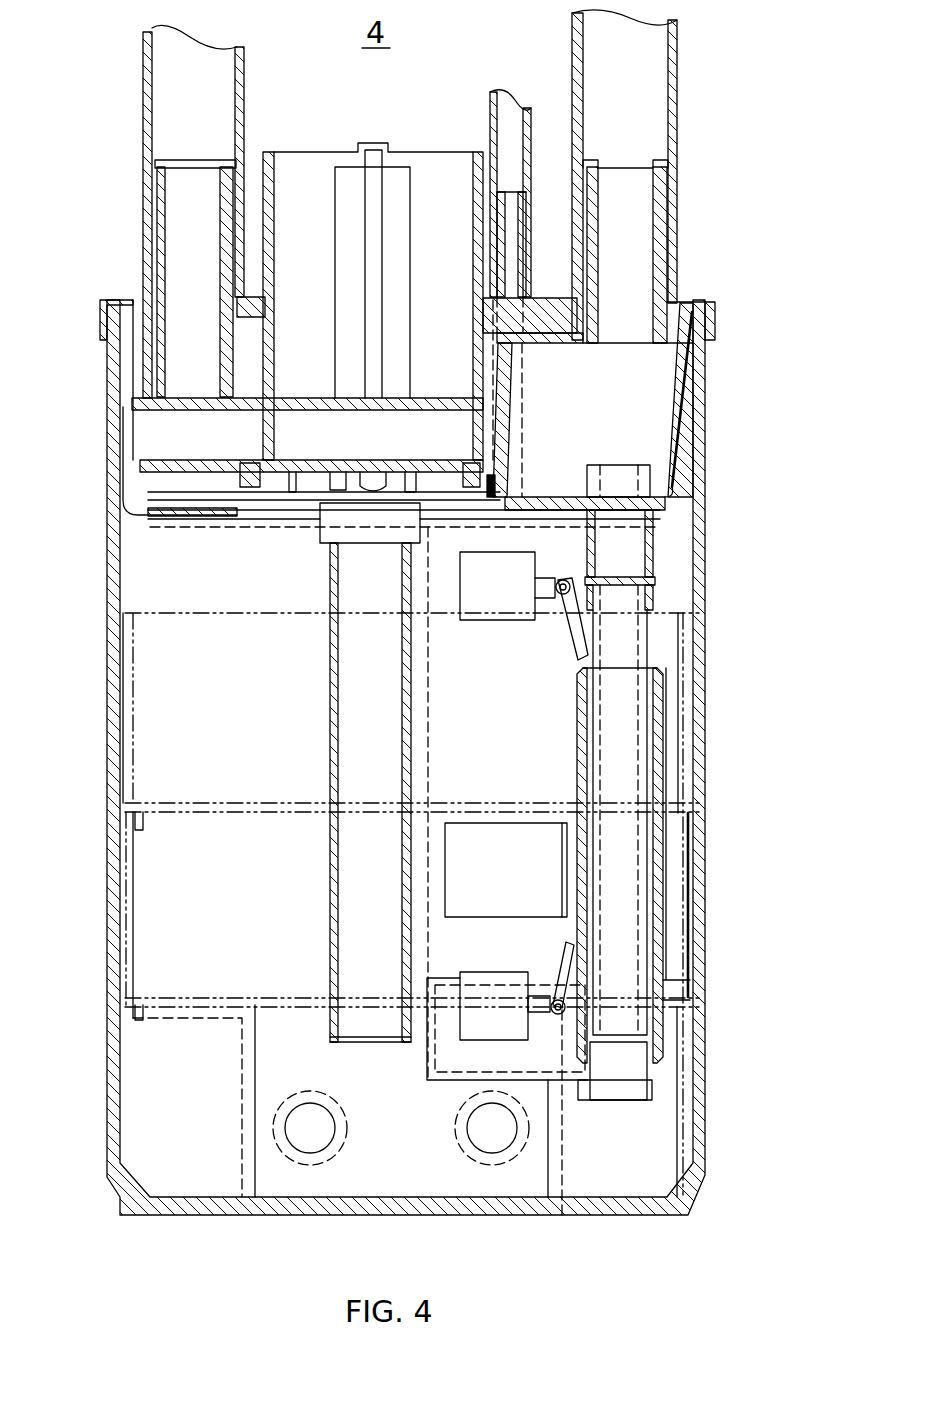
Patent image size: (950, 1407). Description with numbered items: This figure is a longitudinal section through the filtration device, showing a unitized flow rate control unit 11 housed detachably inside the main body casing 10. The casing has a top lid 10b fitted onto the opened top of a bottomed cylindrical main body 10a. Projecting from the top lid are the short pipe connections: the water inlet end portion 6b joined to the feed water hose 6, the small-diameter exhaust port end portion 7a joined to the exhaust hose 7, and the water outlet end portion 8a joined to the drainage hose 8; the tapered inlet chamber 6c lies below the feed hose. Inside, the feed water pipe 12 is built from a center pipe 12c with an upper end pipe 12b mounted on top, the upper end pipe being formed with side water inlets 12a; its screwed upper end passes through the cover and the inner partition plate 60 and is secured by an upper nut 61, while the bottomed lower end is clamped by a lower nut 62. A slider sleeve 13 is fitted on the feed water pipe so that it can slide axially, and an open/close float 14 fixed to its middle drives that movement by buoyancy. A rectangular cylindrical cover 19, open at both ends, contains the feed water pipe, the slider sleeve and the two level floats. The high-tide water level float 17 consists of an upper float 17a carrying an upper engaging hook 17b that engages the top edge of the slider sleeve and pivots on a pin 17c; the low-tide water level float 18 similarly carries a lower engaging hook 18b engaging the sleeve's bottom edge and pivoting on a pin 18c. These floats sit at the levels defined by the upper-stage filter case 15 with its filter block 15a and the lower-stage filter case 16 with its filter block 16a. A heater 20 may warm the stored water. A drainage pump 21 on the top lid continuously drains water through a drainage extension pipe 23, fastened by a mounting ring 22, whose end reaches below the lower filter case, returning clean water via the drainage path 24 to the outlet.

The feed water hose 6 is at (677, 98).
The water inlet end portion 6b is at (640, 225).
The tapered chamber 6c is at (648, 385).
The exhaust hose 7 is at (490, 115).
The exhaust port end portion 7a is at (518, 232).
The drainage hose 8 is at (143, 90).
The water outlet end portion 8a is at (175, 210).
The main body casing 10 is at (712, 672).
The main body 10a is at (706, 752).
The top lid 10b is at (714, 340).
The flow rate control unit 11 is at (574, 767).
The feed water pipe 12 is at (664, 598).
The water inlets 12a is at (655, 563).
The upper end pipe 12b is at (655, 543).
The center pipe 12c is at (640, 718).
The slider sleeve 13 is at (665, 875).
The open/close float 14 is at (474, 823).
The upper-stage filter case 15 is at (128, 745).
The upper absorbent block 15a is at (165, 708).
The lower-stage filter case 16 is at (123, 907).
The lower absorbent block 16a is at (155, 935).
The high-tide water level float 17 is at (486, 630).
The upper float 17a is at (480, 622).
The upper engaging hook 17b is at (580, 657).
The pin 17c is at (566, 605).
The low-tide water level float 18 is at (475, 972).
The lower engaging hook 18b is at (566, 972).
The pin 18c is at (555, 1020).
The cover 19 is at (430, 775).
The heater 20 is at (475, 1235).
The drainage pump 21 is at (306, 148).
The mounting ring 22 is at (320, 533).
The drainage extension pipe 23 is at (330, 683).
The drainage path 24 is at (205, 450).
The inner partition plate 60 is at (545, 497).
The upper nut 61 is at (580, 482).
The lower nut 62 is at (628, 1100).